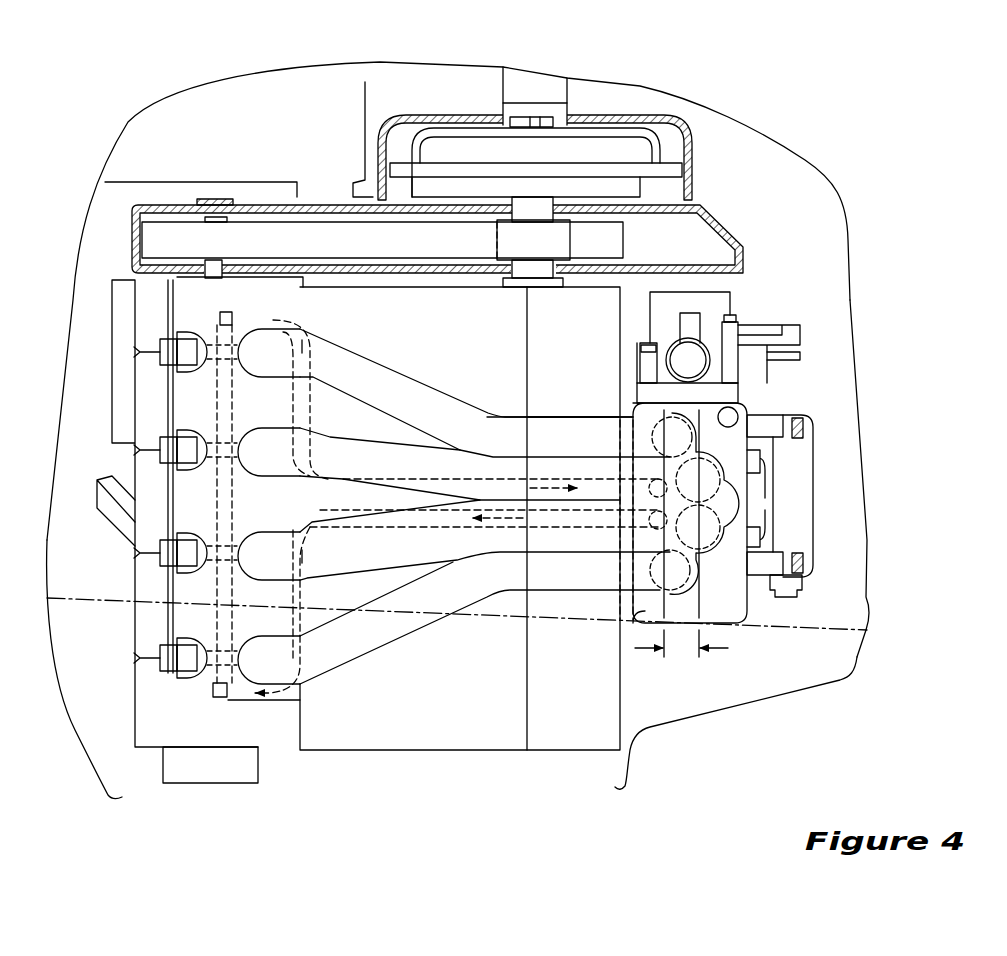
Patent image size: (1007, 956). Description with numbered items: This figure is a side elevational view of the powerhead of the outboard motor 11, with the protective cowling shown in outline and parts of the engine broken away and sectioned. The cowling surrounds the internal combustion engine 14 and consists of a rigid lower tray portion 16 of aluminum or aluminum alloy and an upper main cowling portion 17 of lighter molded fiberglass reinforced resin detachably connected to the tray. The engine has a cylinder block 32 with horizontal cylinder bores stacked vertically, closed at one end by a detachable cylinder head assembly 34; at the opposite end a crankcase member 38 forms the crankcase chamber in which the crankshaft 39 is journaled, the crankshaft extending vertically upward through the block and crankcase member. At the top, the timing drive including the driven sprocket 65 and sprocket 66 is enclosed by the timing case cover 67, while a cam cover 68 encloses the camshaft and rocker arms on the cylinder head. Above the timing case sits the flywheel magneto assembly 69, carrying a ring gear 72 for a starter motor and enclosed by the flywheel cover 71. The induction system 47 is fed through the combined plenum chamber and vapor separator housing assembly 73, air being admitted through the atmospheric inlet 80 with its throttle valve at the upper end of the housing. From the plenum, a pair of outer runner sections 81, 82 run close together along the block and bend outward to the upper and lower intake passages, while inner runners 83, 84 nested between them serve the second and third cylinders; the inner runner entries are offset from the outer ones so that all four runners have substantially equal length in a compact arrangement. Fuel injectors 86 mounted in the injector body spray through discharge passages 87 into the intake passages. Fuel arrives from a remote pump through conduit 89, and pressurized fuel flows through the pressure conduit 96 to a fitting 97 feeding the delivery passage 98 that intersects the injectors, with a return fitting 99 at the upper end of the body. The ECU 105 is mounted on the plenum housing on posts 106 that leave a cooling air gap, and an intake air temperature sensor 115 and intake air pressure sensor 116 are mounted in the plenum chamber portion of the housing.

The outboard motor 11 is at (500, 415).
The internal combustion engine 14 is at (779, 169).
The lower tray portion 16 is at (752, 700).
The upper main cowling portion 17 is at (862, 418).
The cylinder block 32 is at (437, 740).
The cylinder head assembly 34 is at (277, 747).
The crankcase member 38 is at (560, 750).
The crankshaft 39 is at (547, 217).
The induction system 47 is at (575, 413).
The driven sprocket 65 is at (207, 272).
The sprocket 66 is at (257, 222).
The timing case cover 67 is at (157, 203).
The cam cover 68 is at (128, 712).
The flywheel magneto assembly 69 is at (652, 155).
The flywheel cover 71 is at (410, 117).
The ring gear 72 is at (697, 172).
The combined plenum chamber, vapor separator outer housing assembly 73 is at (736, 628).
The atmospheric inlet 80 is at (728, 301).
The outer runner section 81 is at (413, 383).
The outer runner section 82 is at (443, 602).
The inner runner 83 is at (427, 460).
The inner runner 84 is at (380, 562).
The fuel injector 86 is at (168, 450).
The discharge passage 87 is at (183, 660).
The conduit 89 is at (540, 285).
The pressure conduit 96 is at (333, 597).
The fitting 97 is at (220, 697).
The delivery passage 98 is at (220, 623).
The return fitting 99 is at (225, 312).
The ECU 105 is at (805, 488).
The posts 106 is at (763, 423).
The intake air temperature sensor 115 is at (755, 513).
The intake air pressure sensor 116 is at (760, 458).